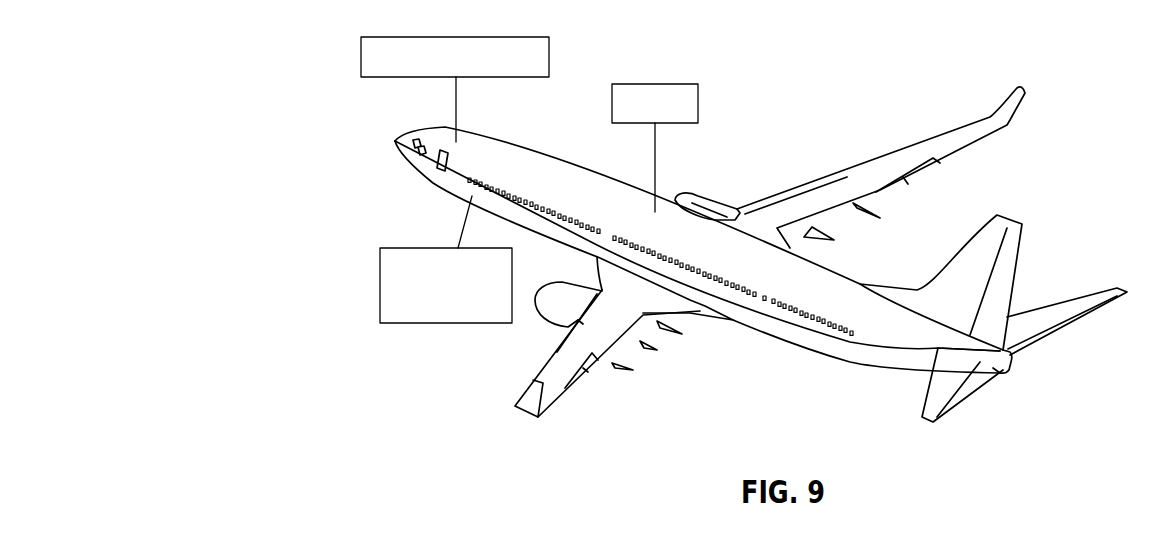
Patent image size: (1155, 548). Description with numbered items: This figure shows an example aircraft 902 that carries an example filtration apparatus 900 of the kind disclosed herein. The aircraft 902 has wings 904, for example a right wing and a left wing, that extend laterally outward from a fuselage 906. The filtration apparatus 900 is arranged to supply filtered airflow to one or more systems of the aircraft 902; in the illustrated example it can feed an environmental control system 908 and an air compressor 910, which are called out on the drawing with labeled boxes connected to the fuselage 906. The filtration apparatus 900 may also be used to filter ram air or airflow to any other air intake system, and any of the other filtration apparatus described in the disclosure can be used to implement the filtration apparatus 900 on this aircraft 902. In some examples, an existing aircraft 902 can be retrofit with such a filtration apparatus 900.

The filtration apparatus 900 is at (453, 249).
The aircraft 902 is at (729, 160).
The wings 904 is at (982, 130).
The fuselage 906 is at (575, 163).
The environmental control system 908 is at (681, 84).
The air compressor 910 is at (431, 35).